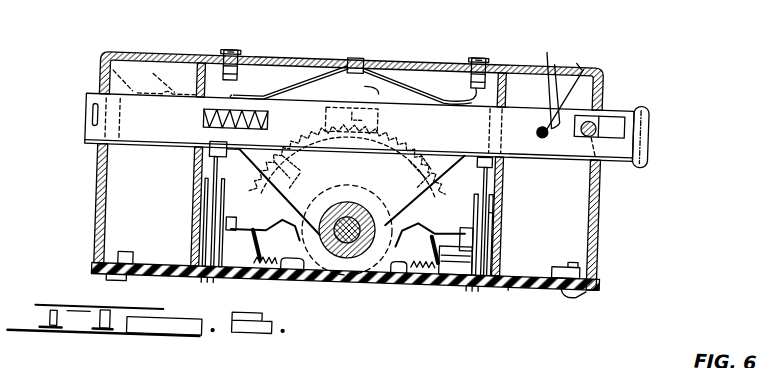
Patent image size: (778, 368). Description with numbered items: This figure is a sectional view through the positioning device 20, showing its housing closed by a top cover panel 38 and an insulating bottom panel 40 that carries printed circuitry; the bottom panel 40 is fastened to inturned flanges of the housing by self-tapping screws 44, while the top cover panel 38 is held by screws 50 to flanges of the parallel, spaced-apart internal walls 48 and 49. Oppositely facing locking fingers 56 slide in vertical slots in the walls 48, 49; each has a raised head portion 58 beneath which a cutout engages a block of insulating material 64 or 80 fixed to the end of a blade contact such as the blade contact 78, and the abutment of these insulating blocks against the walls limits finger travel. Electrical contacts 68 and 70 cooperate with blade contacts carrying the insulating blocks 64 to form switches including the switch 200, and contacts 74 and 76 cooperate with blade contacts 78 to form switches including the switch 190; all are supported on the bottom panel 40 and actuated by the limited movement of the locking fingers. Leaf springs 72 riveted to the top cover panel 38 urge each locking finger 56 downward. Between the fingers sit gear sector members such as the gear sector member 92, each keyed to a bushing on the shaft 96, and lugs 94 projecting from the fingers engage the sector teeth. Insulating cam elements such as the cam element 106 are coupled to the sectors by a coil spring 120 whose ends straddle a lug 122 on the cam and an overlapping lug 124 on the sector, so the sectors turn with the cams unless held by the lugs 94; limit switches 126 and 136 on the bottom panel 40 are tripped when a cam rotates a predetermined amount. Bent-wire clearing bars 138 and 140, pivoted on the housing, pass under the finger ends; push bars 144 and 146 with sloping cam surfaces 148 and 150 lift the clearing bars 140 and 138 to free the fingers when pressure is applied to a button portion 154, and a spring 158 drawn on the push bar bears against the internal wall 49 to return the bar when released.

The positioning device 20 is at (601, 200).
The top cover panel 38 is at (573, 56).
The bottom panel 40 is at (512, 285).
The self-tapping screws 44 is at (114, 281).
The internal wall 48 is at (494, 232).
The internal wall 49 is at (205, 203).
The screws 50 is at (228, 55).
The locking finger 56 is at (353, 82).
The raised head portion 58 is at (237, 72).
The block of insulating material 64 is at (495, 166).
The electrical contact 68 is at (492, 194).
The electrical contact 70 is at (495, 190).
The leaf spring 72 is at (385, 62).
The contact 74 is at (205, 193).
The contact 76 is at (226, 200).
The blade contact 78 is at (240, 153).
The block of insulating material 80 is at (207, 154).
The gear sector member 92 is at (477, 160).
The lug 94 is at (378, 119).
The shaft 96 is at (352, 252).
The cam element 106 is at (405, 216).
The coil spring 120 is at (306, 281).
The lug 122 is at (314, 175).
The lug 124 is at (345, 194).
The limit switch 126 is at (297, 259).
The limit switch 136 is at (401, 259).
The clearing bar 138 is at (551, 91).
The clearing bar 140 is at (161, 116).
The push bar 144 is at (608, 102).
The push bar 146 is at (572, 156).
The sloping cam surface 148 is at (168, 117).
The sloping cam surface 150 is at (583, 60).
The button portion 154 is at (649, 118).
The spring 158 is at (268, 120).
The switch 190 is at (204, 210).
The switch 200 is at (490, 210).